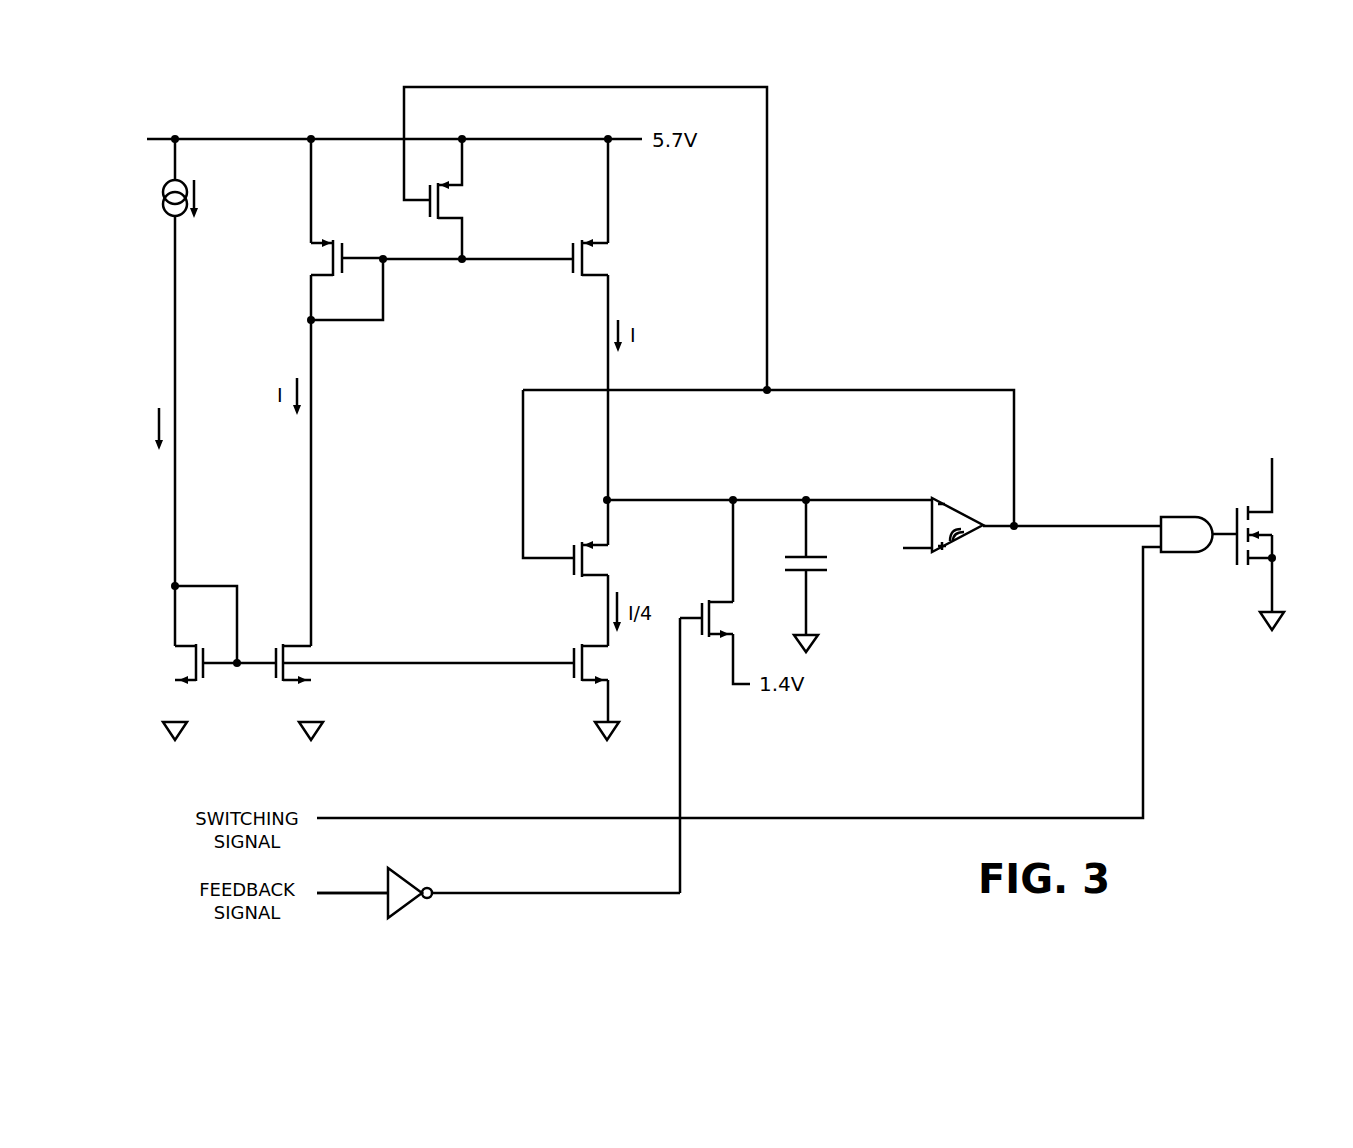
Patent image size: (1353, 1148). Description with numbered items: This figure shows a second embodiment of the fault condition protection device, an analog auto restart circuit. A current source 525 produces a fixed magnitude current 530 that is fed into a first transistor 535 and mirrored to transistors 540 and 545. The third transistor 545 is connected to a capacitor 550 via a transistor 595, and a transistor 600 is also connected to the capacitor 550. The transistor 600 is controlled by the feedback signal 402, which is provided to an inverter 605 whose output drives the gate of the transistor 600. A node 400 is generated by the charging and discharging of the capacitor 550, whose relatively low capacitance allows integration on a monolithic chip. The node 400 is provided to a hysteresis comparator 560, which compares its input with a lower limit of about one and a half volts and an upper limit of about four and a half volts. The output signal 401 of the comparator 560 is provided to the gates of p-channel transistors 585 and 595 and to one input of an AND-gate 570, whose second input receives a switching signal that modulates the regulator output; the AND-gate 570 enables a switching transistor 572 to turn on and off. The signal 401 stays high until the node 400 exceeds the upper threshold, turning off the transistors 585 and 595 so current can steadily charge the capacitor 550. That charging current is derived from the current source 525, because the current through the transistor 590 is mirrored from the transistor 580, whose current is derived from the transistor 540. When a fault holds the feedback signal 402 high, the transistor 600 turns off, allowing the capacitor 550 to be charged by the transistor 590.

The node 400 is at (769, 488).
The signal 401 is at (1072, 514).
The feedback signal 402 is at (352, 880).
The current source 525 is at (162, 199).
The fixed magnitude current 530 is at (143, 429).
The first transistor 535 is at (193, 664).
The transistor 540 is at (405, 660).
The third transistor 545 is at (602, 664).
The capacitor 550 is at (817, 567).
The hysteresis comparator 560 is at (925, 536).
The AND-gate 570 is at (1199, 519).
The switching transistor 572 is at (1275, 535).
The transistor 580 is at (334, 257).
The transistor 585 is at (457, 199).
The transistor 590 is at (600, 257).
The transistor 595 is at (602, 559).
The transistor 600 is at (730, 619).
The inverter 605 is at (534, 902).